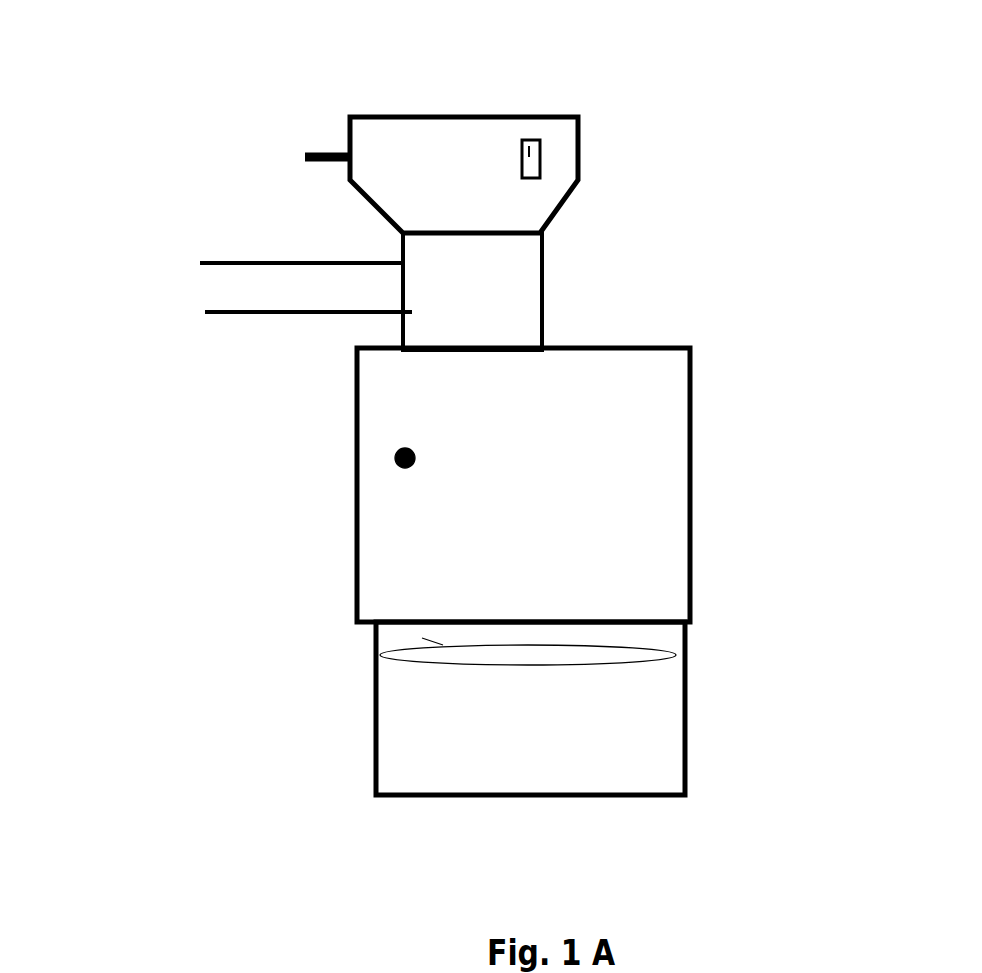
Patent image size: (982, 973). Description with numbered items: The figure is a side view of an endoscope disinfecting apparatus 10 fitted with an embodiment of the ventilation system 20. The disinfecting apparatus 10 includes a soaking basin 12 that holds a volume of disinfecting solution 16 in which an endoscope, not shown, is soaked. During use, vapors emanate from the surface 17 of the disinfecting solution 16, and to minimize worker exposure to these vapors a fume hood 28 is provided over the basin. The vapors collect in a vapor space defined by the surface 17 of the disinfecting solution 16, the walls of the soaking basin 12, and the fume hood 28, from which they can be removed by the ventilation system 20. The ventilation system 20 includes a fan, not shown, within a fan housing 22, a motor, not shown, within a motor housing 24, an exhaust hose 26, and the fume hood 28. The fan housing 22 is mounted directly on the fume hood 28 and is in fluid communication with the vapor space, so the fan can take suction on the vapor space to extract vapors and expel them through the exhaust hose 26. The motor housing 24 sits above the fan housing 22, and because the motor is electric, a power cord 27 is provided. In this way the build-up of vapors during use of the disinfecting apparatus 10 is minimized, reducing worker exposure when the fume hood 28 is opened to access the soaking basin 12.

The endoscope disinfecting apparatus 10 is at (265, 701).
The soaking basin 12 is at (687, 693).
The disinfecting solution 16 is at (552, 759).
The surface of the disinfecting solution 17 is at (343, 554).
The ventilation system 20 is at (730, 280).
The fan housing 22 is at (483, 300).
The motor housing 24 is at (453, 183).
The exhaust hose 26 is at (230, 313).
The power cord 27 is at (330, 147).
The fume hood 28 is at (522, 477).